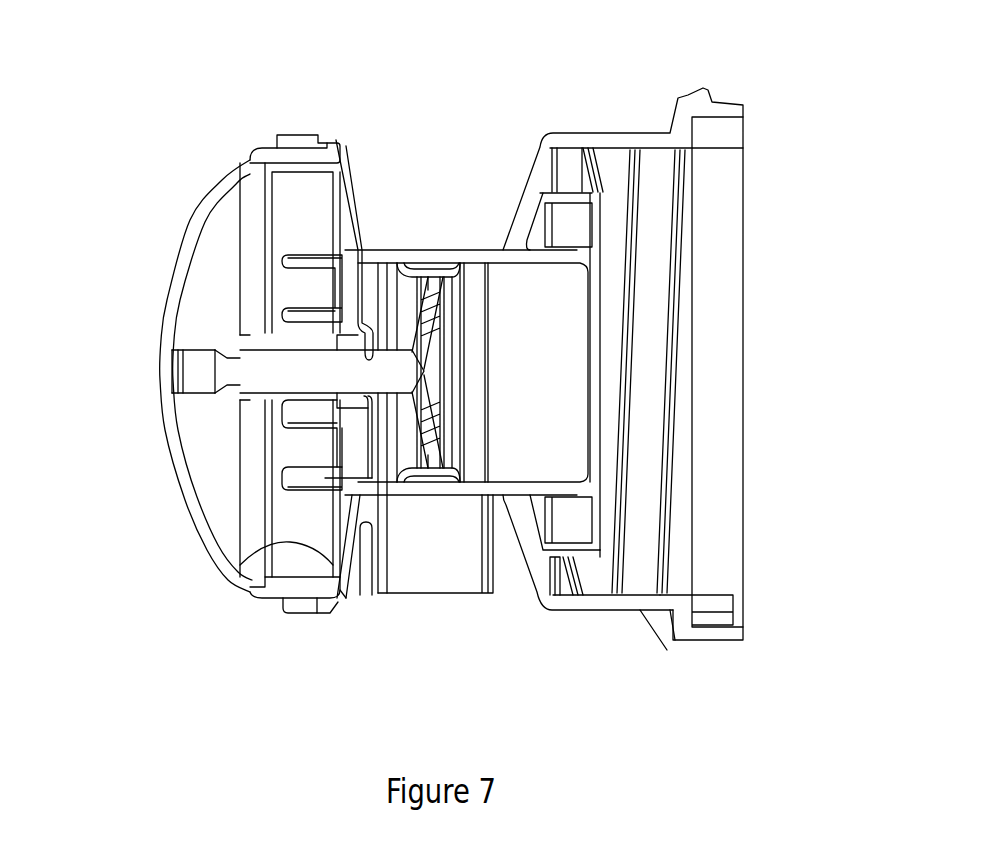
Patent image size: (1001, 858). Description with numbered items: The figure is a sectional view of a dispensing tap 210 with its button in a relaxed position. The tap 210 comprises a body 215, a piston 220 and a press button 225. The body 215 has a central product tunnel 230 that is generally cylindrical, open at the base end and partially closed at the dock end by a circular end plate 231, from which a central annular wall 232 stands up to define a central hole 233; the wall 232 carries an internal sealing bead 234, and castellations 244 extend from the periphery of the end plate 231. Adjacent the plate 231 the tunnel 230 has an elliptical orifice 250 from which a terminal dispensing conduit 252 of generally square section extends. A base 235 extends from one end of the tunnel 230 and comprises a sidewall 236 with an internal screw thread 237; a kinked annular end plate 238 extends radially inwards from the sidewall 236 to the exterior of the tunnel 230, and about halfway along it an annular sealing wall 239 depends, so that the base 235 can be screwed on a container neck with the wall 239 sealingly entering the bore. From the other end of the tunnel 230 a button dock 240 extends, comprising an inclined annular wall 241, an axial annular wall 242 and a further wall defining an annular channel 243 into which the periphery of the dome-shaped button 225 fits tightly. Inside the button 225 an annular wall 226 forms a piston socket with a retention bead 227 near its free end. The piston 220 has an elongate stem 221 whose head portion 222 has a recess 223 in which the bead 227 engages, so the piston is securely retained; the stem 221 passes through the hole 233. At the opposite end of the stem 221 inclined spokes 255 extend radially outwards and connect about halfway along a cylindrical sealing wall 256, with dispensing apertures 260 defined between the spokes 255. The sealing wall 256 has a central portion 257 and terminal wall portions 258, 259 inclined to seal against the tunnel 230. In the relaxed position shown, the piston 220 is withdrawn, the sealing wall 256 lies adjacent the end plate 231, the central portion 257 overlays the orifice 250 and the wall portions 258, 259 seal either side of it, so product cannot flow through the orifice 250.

The dispensing tap 210 is at (242, 70).
The body 215 is at (538, 132).
The piston 220 is at (337, 348).
The elongate stem 221 is at (273, 337).
The head portion 222 is at (180, 392).
The recess 223 is at (240, 357).
The press button 225 is at (170, 252).
The annular wall 226 is at (333, 350).
The retention bead 227 is at (180, 355).
The central product tunnel 230 is at (453, 267).
The circular end plate 231 is at (337, 430).
The central annular wall 232 is at (350, 410).
The central hole 233 is at (322, 248).
The internal sealing bead 234 is at (362, 245).
The base 235 is at (582, 617).
The sidewall 236 is at (645, 614).
The internal screw thread 237 is at (652, 590).
The kinked annular end plate 238 is at (495, 565).
The annular sealing wall 239 is at (628, 490).
The button dock 240 is at (327, 613).
The inclined annular wall 241 is at (355, 592).
The axial annular wall 242 is at (290, 612).
The annular channel 243 is at (270, 543).
The castellations 244 is at (183, 372).
The elliptical orifice 250 is at (452, 470).
The terminal dispensing conduit 252 is at (528, 548).
The inclined spokes 255 is at (437, 425).
The cylindrical sealing wall 256 is at (465, 268).
The central portion 257 is at (428, 268).
The terminal wall portion 258 is at (395, 268).
The terminal wall portion 259 is at (477, 266).
The dispensing apertures 260 is at (455, 410).